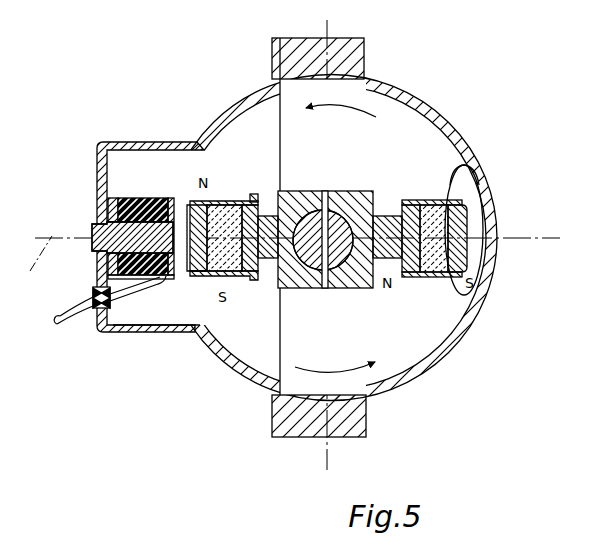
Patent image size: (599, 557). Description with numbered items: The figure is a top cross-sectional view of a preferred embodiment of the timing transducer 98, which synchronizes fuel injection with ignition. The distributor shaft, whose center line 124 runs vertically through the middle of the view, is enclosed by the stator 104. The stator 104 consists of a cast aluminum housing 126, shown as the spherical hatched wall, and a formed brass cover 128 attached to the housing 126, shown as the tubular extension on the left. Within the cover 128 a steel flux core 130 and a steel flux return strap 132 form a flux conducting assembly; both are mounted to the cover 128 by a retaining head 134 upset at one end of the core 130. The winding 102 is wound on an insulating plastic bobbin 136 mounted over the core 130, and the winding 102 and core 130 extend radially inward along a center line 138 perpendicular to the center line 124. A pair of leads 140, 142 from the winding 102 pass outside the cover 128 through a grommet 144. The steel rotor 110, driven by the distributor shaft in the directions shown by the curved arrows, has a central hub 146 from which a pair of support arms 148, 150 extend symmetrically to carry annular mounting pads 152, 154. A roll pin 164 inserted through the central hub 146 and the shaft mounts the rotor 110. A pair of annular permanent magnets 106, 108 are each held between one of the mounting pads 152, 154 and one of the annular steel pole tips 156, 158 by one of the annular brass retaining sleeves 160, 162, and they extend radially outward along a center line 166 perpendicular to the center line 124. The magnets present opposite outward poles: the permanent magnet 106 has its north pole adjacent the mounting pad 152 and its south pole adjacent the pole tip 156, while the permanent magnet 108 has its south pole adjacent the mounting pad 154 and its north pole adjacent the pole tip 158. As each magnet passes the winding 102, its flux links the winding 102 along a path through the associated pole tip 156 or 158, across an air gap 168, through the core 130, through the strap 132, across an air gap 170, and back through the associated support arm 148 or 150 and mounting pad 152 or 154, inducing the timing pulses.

The timing transducer 98 is at (342, 214).
The winding 102 is at (132, 200).
The stator 104 is at (400, 77).
The permanent magnet 106 is at (469, 294).
The permanent magnet 108 is at (219, 278).
The rotor 110 is at (367, 292).
The center line 124 is at (312, 288).
The housing 126 is at (444, 121).
The cover 128 is at (109, 143).
The flux core 130 is at (112, 224).
The flux return strap 132 is at (156, 198).
The retaining head 134 is at (102, 246).
The bobbin 136 is at (150, 298).
The center line 138 is at (27, 264).
The lead 140 is at (82, 311).
The lead 142 is at (66, 327).
The grommet 144 is at (87, 318).
The central hub 146 is at (272, 290).
The support arm 148 is at (389, 216).
The support arm 150 is at (273, 217).
The mounting pad 152 is at (433, 268).
The mounting pad 154 is at (231, 201).
The pole tip 156 is at (464, 223).
The pole tip 158 is at (182, 243).
The retaining sleeve 160 is at (476, 167).
The retaining sleeve 162 is at (254, 194).
The roll pin 164 is at (324, 196).
The center line 166 is at (516, 238).
The air gap 168 is at (145, 284).
The air gap 170 is at (263, 277).